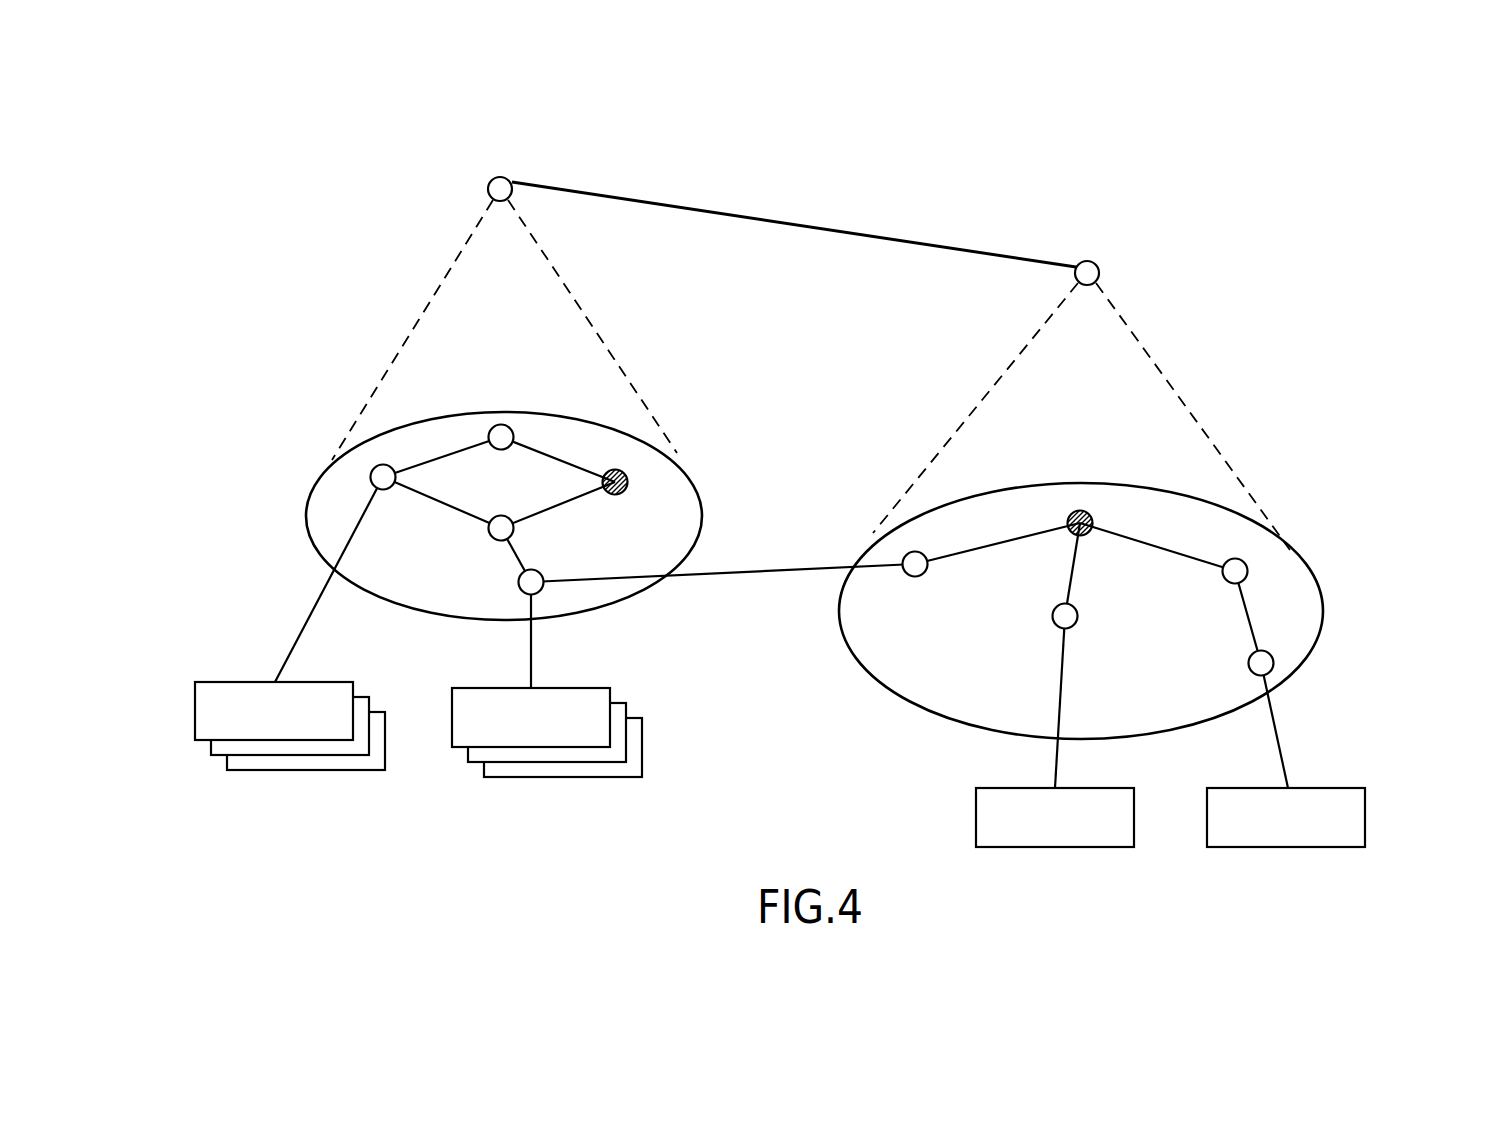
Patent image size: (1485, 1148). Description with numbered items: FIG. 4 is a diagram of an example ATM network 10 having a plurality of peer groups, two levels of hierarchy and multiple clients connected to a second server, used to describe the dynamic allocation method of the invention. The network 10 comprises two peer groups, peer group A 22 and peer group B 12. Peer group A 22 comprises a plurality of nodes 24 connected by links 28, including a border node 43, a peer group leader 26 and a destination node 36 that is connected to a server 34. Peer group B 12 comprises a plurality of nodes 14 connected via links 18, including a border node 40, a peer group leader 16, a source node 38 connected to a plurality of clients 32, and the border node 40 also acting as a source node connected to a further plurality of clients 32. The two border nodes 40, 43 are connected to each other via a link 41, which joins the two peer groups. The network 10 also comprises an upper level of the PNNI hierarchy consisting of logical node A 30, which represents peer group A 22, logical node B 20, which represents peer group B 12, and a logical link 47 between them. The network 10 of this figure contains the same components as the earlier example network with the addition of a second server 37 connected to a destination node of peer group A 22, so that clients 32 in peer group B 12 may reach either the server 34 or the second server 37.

The network 10 is at (385, 859).
The peer group B 12 is at (698, 495).
The nodes 14 is at (500, 543).
The peer group leader 16 is at (627, 488).
The links 18 is at (543, 515).
The logical node B 20 is at (504, 177).
The peer group A 22 is at (1322, 610).
The nodes 24 is at (1247, 567).
The peer group leader 26 is at (1093, 522).
The links 28 is at (1132, 545).
The logical node A 30 is at (1090, 261).
The clients 32 is at (195, 708).
The server 34 is at (1365, 815).
The destination node 36 is at (1273, 660).
The second server 37 is at (976, 813).
The source node 38 is at (368, 478).
The border node 40 is at (543, 590).
The link 41 is at (733, 573).
The border node 43 is at (910, 572).
The logical link 47 is at (777, 218).